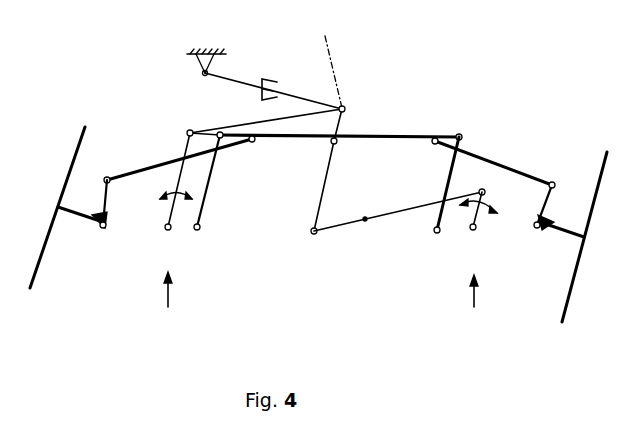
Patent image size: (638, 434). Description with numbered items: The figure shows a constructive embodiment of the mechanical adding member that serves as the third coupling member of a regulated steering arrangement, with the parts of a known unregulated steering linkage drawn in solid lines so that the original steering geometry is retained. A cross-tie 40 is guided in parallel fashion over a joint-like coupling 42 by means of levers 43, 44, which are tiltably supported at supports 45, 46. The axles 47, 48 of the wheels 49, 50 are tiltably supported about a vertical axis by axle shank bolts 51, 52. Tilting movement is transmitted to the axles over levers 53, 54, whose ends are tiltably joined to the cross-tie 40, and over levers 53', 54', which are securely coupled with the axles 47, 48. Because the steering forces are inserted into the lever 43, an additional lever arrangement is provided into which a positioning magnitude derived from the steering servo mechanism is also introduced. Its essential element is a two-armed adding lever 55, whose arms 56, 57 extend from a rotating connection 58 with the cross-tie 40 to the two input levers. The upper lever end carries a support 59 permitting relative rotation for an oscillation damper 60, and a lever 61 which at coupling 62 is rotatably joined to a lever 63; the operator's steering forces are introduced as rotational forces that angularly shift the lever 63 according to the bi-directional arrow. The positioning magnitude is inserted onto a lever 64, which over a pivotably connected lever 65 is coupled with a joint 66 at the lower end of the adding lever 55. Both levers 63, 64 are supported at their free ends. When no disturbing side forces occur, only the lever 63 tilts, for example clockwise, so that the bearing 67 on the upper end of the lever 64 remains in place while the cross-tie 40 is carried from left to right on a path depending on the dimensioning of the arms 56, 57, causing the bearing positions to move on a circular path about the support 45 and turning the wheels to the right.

The cross-tie 40 is at (420, 133).
The joint-like coupling 42 is at (461, 134).
The lever 43 is at (207, 195).
The lever 44 is at (445, 185).
The tiltable support 45 is at (198, 230).
The tiltable support 46 is at (436, 233).
The axle 47 is at (80, 218).
The axle 48 is at (565, 235).
The wheel 49 is at (38, 270).
The wheel 50 is at (566, 295).
The axle shank bolt 51 is at (108, 229).
The axle shank bolt 52 is at (534, 229).
The lever 53 is at (179, 144).
The lever 53' is at (147, 202).
The lever 54 is at (492, 129).
The lever 54' is at (566, 203).
The adding lever 55 is at (327, 182).
The arm of adding lever 56 is at (345, 117).
The arm of adding lever 57 is at (311, 222).
The rotating connection 58 is at (328, 146).
The support 59 is at (329, 60).
The oscillation damper 60 is at (268, 78).
The lever 61 is at (240, 125).
The rotatable coupling 62 is at (186, 130).
The lever 63 is at (169, 231).
The lever 64 is at (475, 230).
The lever 65 is at (365, 220).
The joint 66 is at (313, 234).
The bearing 67 is at (485, 193).